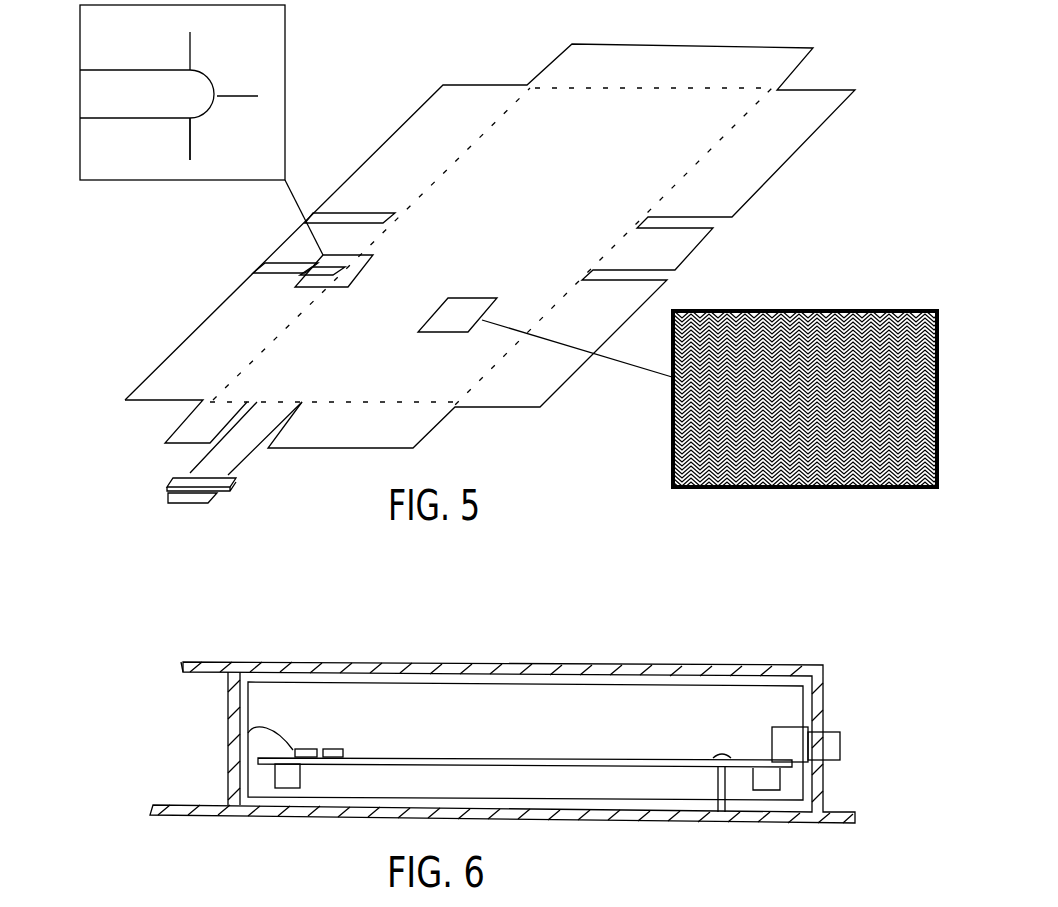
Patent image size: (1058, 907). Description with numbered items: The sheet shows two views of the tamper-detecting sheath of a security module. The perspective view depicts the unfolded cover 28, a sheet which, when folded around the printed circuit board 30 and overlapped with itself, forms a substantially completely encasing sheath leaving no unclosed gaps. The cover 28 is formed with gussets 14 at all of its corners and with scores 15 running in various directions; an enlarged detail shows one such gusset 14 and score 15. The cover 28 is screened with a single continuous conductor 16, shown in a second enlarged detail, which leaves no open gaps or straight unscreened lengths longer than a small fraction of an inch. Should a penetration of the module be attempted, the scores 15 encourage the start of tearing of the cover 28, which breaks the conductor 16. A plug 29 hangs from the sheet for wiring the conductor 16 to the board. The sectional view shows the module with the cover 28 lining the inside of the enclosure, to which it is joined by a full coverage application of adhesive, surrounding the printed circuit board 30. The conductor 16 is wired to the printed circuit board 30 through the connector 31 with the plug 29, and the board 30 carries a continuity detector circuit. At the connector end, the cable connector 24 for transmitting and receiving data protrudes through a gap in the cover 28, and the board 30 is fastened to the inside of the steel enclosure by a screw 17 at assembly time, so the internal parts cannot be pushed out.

In FIG. 5, the gussets 14 is at (134, 115).
In FIG. 5, the scores 15 is at (190, 138).
In FIG. 5, the single continuous conductor 16 is at (805, 311).
In FIG. 6, the screw 17 is at (722, 790).
In FIG. 6, the cable connector 24 is at (785, 727).
In FIG. 5, the cover 28 is at (190, 337).
In FIG. 6, the cover 28 is at (625, 687).
In FIG. 5, the plug 29 is at (173, 478).
In FIG. 6, the plug 29 is at (300, 749).
In FIG. 6, the printed circuit board 30 is at (590, 758).
In FIG. 6, the connector 31 is at (340, 750).